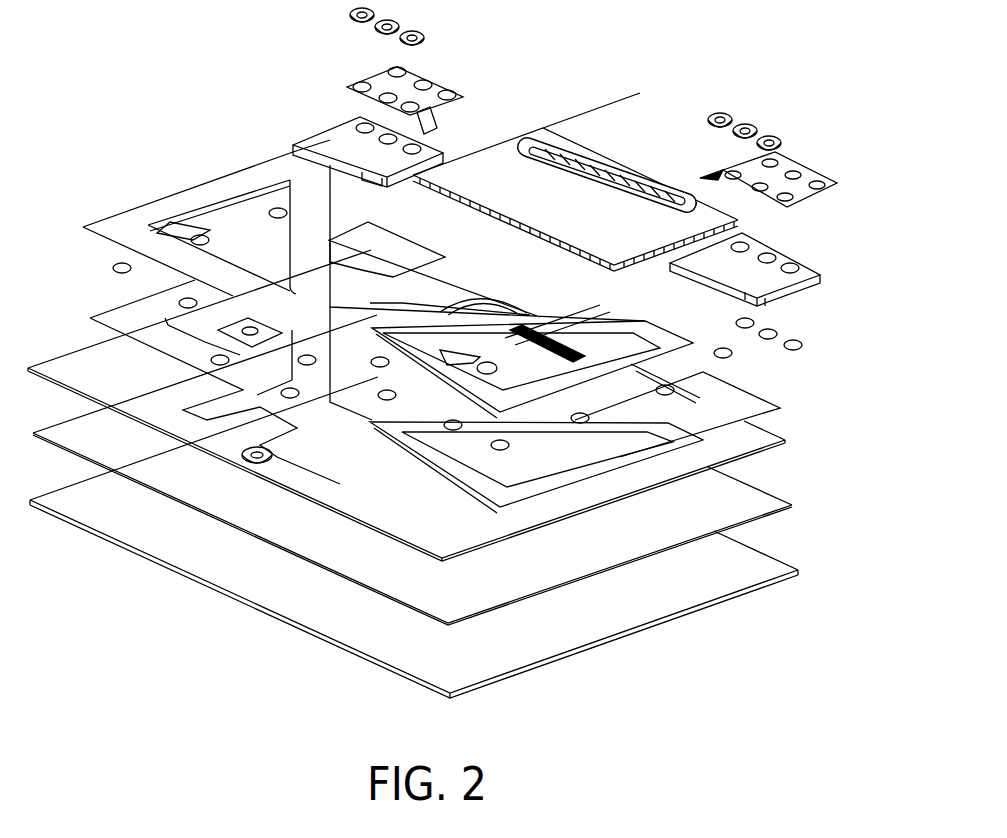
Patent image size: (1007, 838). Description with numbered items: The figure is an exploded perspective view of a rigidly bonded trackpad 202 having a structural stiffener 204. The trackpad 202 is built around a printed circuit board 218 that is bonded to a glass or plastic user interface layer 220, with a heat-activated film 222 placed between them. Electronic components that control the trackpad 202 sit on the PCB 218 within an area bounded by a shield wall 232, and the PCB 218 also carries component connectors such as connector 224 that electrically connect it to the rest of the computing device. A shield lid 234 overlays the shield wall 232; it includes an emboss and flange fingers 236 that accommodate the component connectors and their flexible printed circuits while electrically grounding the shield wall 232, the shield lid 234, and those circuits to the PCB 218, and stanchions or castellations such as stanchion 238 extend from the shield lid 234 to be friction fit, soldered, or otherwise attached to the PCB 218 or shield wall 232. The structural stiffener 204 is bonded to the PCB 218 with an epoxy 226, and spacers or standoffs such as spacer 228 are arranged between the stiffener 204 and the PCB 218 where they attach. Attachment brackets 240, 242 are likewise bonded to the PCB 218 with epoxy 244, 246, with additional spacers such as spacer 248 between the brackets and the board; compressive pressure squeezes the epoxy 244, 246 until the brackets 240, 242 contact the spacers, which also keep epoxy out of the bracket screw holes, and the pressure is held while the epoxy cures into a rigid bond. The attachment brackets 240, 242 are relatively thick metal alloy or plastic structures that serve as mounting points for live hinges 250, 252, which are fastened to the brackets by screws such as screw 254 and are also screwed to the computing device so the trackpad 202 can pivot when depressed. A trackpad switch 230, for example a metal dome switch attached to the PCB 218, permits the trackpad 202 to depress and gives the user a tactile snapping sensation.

The trackpad 202 is at (150, 78).
The structural stiffener 204 is at (143, 202).
The printed circuit board 218 is at (765, 453).
The user interface layer 220 is at (768, 590).
The heat-activated film 222 is at (767, 516).
The connector 224 is at (580, 348).
The epoxy 226 is at (107, 327).
The spacer 228 is at (113, 268).
The trackpad switch 230 is at (272, 461).
The shield wall 232 is at (487, 297).
The shield lid 234 is at (487, 150).
The flange fingers 236 is at (578, 156).
The stanchion 238 is at (517, 231).
The attachment bracket 240 is at (318, 128).
The attachment bracket 242 is at (787, 294).
The epoxy 244 is at (420, 248).
The epoxy 246 is at (780, 410).
The spacer 248 is at (768, 340).
The live hinge 250 is at (370, 72).
The live hinge 252 is at (742, 168).
The screw 254 is at (710, 115).